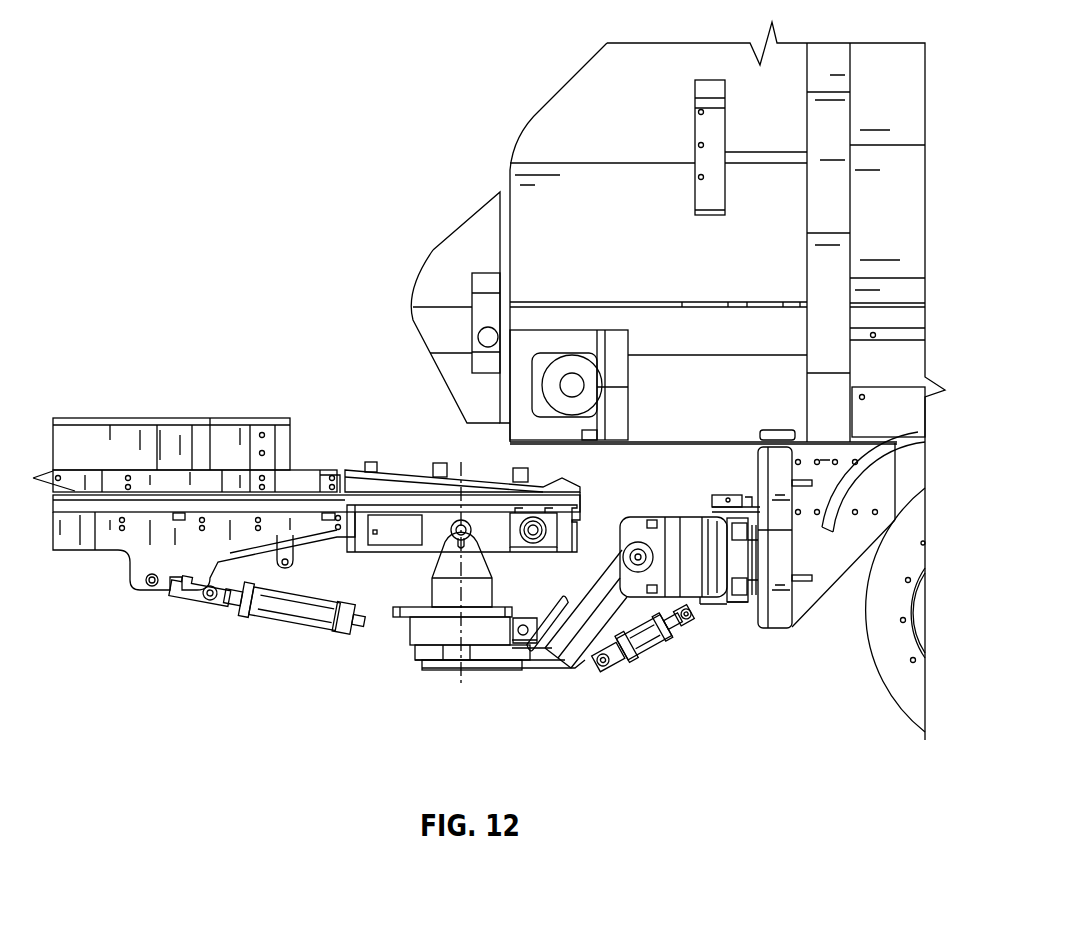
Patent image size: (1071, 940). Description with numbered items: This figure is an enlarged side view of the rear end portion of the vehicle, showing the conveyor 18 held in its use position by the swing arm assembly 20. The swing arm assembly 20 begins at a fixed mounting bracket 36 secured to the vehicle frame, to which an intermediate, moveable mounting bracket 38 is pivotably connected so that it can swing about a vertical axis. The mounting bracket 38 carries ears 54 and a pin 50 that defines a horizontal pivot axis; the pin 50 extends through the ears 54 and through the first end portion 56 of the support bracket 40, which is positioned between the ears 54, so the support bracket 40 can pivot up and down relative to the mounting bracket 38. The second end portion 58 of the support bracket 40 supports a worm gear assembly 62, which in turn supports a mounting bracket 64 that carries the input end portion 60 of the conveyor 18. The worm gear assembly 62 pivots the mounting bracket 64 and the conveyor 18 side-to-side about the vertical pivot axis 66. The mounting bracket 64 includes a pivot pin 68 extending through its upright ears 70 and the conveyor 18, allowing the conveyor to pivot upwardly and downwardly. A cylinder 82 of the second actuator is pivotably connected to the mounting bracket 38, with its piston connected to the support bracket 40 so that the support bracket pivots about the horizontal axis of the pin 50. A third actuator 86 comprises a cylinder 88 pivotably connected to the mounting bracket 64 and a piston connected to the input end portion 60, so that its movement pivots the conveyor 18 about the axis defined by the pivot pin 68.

The conveyor 18 is at (117, 425).
The swing arm assembly 20 is at (626, 712).
The fixed mounting bracket 36 is at (737, 572).
The mounting bracket 38 is at (716, 520).
The support bracket 40 is at (560, 645).
The pin 50 is at (626, 546).
The ears 54 is at (675, 518).
The first end portion 56 is at (613, 578).
The second end portion 58 is at (437, 670).
The input end portion 60 is at (360, 480).
The worm gear assembly 62 is at (407, 637).
The mounting bracket 64 is at (440, 603).
The vertical pivot axis 66 is at (462, 688).
The pivot pin 68 is at (447, 530).
The upright ears 70 is at (472, 514).
The cylinder 82 is at (655, 650).
The third actuator 86 is at (297, 608).
The cylinder 88 is at (297, 627).